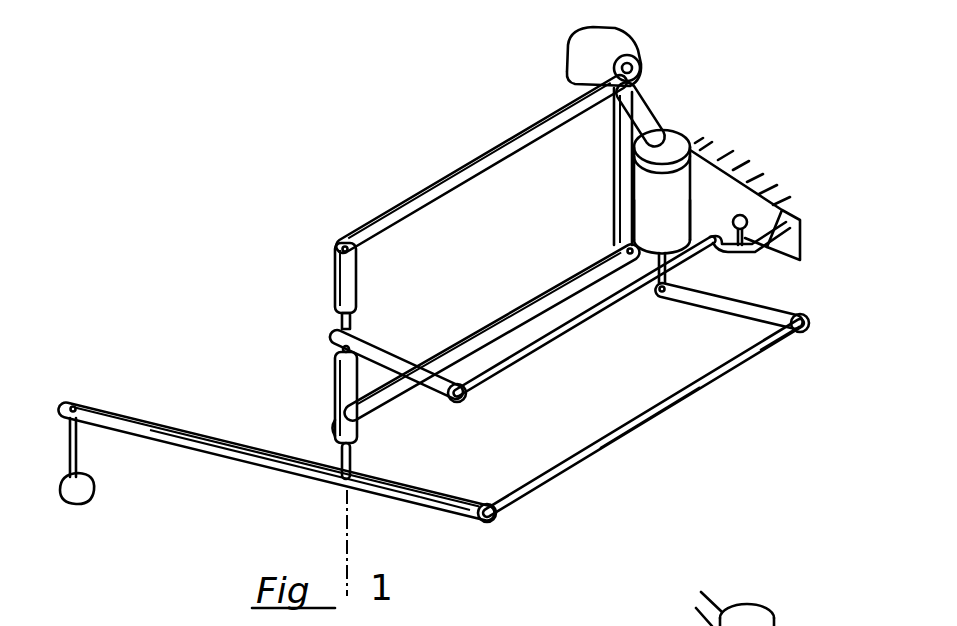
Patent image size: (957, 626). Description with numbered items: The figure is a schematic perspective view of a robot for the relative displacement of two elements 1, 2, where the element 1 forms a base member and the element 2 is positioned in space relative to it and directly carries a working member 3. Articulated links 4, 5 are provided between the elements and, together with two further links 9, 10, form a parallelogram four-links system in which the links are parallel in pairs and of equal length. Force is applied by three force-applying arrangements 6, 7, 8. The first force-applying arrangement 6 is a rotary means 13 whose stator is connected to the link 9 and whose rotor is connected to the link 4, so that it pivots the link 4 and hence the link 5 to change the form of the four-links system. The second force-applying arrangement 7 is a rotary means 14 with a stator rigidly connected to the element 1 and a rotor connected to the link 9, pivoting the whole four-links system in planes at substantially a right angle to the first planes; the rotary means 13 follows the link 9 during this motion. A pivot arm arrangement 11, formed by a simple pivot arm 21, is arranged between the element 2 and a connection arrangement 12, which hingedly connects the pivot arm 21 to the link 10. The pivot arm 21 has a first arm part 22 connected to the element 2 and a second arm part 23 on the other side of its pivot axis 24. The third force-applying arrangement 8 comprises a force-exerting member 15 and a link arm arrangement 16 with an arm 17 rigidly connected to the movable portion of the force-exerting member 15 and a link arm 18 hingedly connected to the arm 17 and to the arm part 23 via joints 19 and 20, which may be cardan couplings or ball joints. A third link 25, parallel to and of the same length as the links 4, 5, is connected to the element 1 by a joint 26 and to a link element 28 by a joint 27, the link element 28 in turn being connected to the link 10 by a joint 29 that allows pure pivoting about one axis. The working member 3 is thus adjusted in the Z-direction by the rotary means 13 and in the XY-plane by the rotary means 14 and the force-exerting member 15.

The element 1 is at (782, 210).
The element 2 is at (95, 462).
The working member 3 is at (80, 490).
The articulated link 4 is at (477, 170).
The articulated link 5 is at (547, 298).
The force-applying arrangement 6 is at (668, 40).
The force-applying arrangement 7 is at (684, 125).
The force-applying arrangement 8 is at (785, 413).
The link 9 is at (620, 163).
The link 10 is at (347, 283).
The pivot arm arrangement 11 is at (249, 432).
The connection arrangement 12 is at (357, 455).
The rotary means 13 is at (587, 50).
The rotary means 14 is at (677, 170).
The force-exerting member 15 is at (647, 230).
The link arm arrangement 16 is at (717, 400).
The arm 17 is at (733, 307).
The link arm 18 is at (668, 407).
The joint 19 is at (802, 320).
The joint 20 is at (485, 523).
The pivot arm 21 is at (300, 480).
The arm part 22 is at (217, 447).
The arm part 23 is at (438, 498).
The pivot axis 24 is at (348, 537).
The third link 25 is at (583, 318).
The joint 26 is at (748, 212).
The joint 27 is at (466, 392).
The link element 28 is at (393, 363).
The joint 29 is at (342, 330).